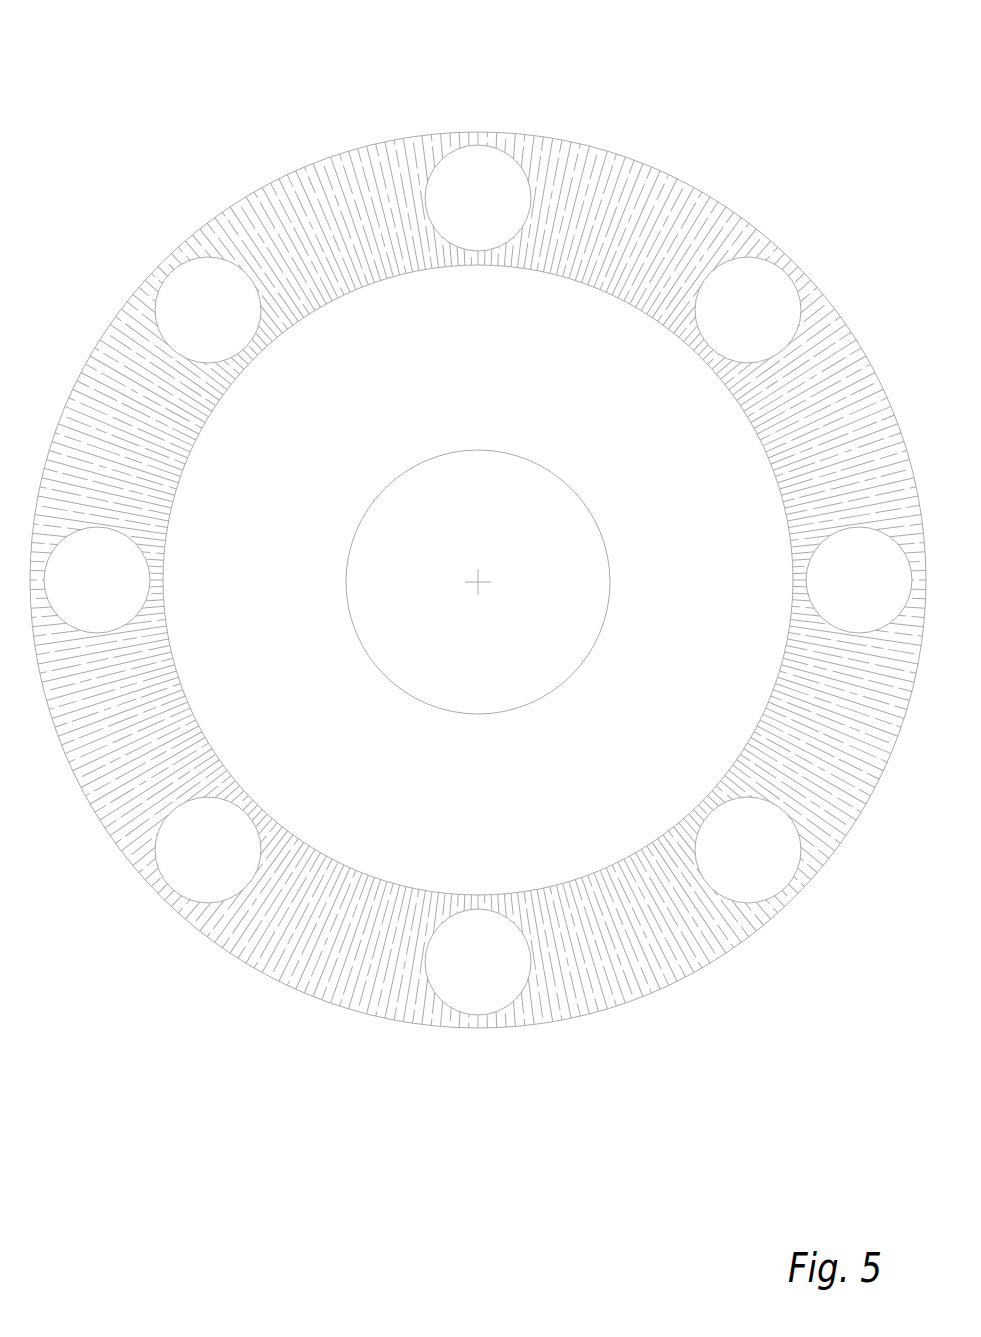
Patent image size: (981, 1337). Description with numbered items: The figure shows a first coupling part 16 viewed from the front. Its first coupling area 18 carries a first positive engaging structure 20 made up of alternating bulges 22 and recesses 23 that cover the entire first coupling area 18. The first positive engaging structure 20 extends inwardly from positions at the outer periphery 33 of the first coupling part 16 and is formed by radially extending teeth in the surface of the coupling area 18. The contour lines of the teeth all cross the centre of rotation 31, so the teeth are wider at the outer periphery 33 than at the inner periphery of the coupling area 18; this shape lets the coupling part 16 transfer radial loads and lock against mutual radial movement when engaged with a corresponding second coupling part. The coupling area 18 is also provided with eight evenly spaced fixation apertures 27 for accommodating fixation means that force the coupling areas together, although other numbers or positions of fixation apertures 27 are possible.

The first coupling part 16 is at (285, 125).
The first coupling area 18 is at (347, 200).
The first positive engaging structure 20 is at (600, 173).
The bulges 22 is at (727, 220).
The recesses 23 is at (687, 180).
The fixation apertures 27 is at (473, 988).
The centre of rotation 31 is at (478, 582).
The outer periphery 33 is at (227, 210).